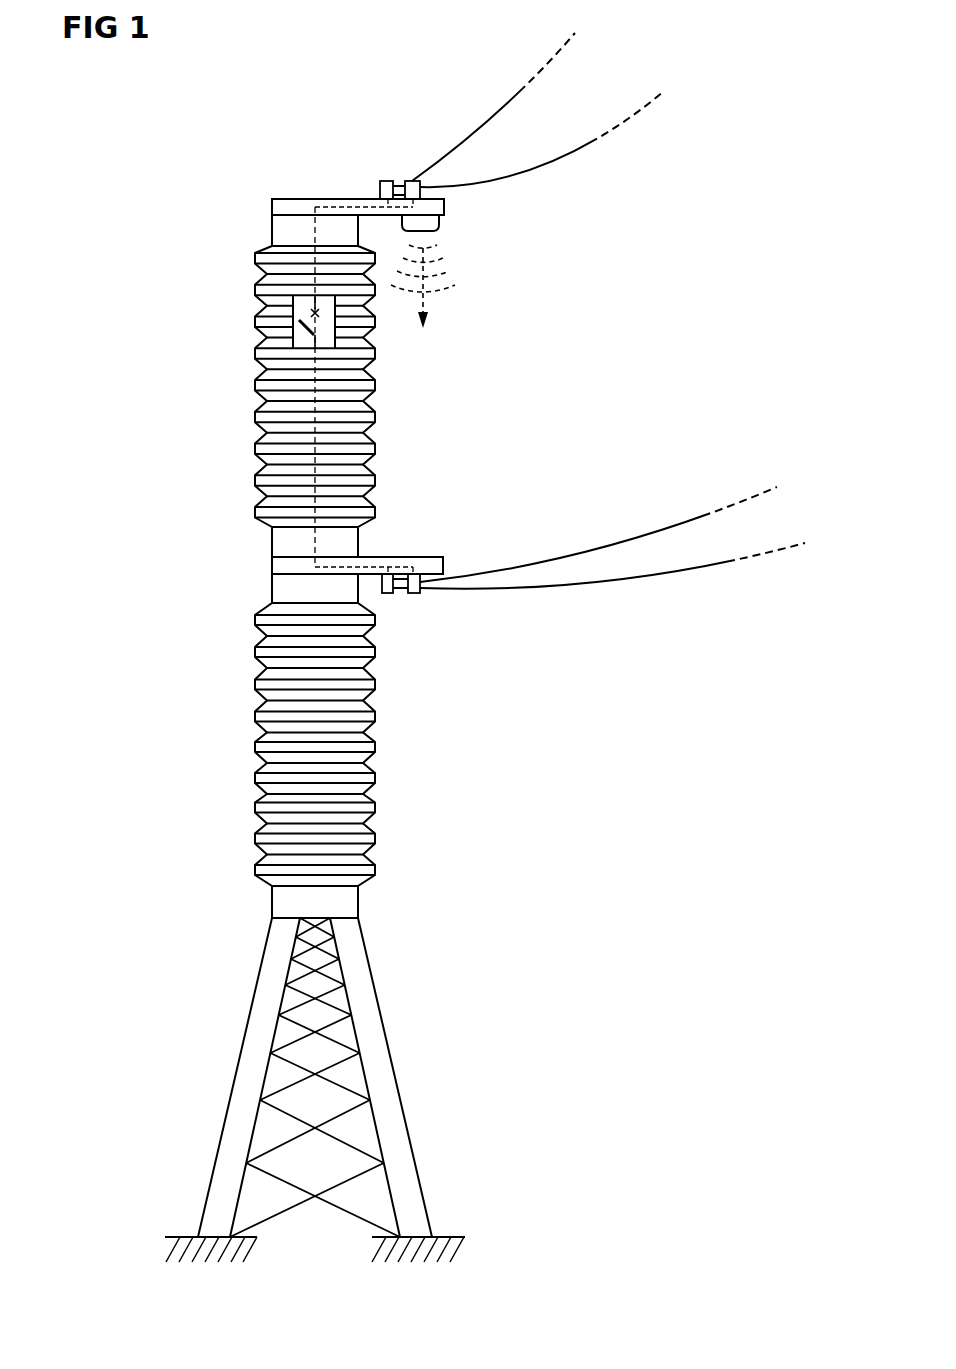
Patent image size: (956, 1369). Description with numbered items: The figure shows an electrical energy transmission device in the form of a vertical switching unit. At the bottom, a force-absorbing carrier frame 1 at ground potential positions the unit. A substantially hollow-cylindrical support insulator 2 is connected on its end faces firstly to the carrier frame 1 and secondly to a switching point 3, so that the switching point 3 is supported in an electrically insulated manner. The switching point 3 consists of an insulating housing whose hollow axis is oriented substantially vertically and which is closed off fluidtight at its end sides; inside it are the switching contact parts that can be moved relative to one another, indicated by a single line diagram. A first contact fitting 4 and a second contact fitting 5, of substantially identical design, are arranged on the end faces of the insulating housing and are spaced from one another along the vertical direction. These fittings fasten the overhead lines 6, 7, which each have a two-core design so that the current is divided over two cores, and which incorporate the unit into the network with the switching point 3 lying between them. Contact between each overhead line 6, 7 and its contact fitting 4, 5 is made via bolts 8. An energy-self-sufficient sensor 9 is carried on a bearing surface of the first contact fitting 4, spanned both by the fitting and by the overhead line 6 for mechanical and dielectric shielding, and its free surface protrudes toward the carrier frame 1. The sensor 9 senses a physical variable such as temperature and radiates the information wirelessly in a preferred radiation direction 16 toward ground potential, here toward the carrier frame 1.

The carrier frame 1 is at (235, 1075).
The support insulator 2 is at (255, 718).
The switching point 3 is at (255, 420).
The first contact fitting 4 is at (285, 198).
The second contact fitting 5 is at (271, 567).
The overhead line 6 is at (480, 127).
The overhead line 7 is at (562, 558).
The bolts 8 is at (408, 181).
The sensor 9 is at (440, 222).
The preferred radiation direction 16 is at (426, 302).